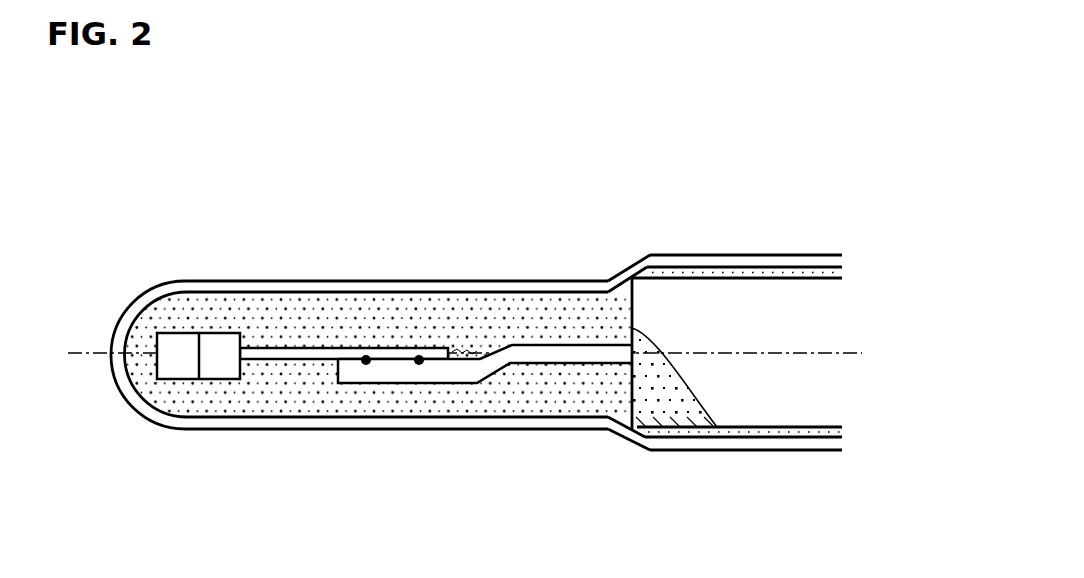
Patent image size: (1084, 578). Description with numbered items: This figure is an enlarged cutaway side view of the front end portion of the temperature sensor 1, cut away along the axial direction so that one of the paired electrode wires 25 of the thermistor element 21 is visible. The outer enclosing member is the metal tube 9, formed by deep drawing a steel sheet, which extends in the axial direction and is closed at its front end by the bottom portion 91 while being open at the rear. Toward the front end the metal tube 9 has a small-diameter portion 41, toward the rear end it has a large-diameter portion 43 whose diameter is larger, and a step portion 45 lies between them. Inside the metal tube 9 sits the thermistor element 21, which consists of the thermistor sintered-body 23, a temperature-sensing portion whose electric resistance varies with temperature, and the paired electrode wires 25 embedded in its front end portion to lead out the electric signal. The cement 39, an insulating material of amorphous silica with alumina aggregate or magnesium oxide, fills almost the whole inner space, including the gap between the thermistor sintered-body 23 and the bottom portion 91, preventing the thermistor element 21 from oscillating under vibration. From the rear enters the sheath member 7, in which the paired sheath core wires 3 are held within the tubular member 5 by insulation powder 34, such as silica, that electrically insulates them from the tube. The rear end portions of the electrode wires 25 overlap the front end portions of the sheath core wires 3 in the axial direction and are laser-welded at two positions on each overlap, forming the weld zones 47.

The temperature sensor 1 is at (195, 215).
The metal tube 9 is at (680, 188).
The small-diameter portion 41 is at (497, 287).
The step portion 45 is at (623, 267).
The large-diameter portion 43 is at (687, 262).
The bottom portion 91 is at (122, 373).
The cement 39 is at (357, 317).
The thermistor element 21 is at (282, 482).
The thermistor sintered-body 23 is at (185, 368).
The electrode wires 25 is at (287, 357).
The weld zones 47 is at (366, 362).
The sheath member 7 is at (540, 498).
The sheath core wires 3 is at (528, 358).
The insulation powder 34 is at (640, 405).
The tubular member 5 is at (690, 427).